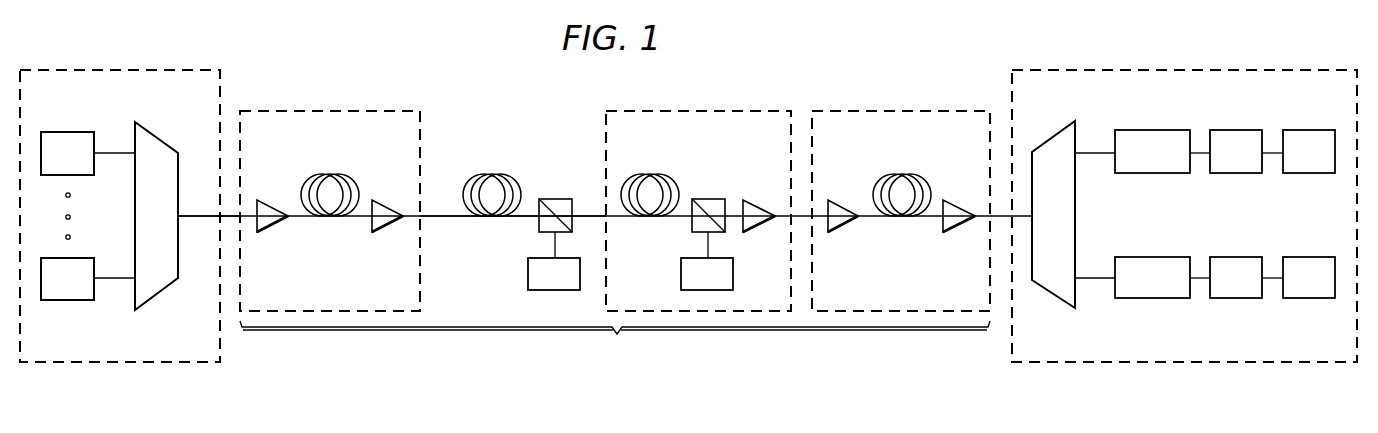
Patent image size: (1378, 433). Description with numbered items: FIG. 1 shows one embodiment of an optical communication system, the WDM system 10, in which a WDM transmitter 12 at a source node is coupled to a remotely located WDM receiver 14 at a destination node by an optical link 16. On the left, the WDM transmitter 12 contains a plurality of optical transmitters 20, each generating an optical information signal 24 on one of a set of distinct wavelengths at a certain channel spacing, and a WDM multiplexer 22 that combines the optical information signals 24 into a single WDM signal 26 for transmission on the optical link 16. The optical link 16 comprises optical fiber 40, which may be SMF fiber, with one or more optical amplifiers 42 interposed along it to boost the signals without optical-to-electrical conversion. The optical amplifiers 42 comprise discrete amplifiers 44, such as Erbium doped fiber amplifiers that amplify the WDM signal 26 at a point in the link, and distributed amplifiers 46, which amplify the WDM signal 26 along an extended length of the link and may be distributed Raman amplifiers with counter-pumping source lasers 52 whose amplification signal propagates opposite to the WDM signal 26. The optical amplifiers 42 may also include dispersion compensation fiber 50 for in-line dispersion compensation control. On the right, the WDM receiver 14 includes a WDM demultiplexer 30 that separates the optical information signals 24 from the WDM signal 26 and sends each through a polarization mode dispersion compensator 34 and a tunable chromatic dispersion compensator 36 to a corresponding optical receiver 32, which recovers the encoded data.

The WDM system 10 is at (418, 58).
The WDM transmitter 12 is at (99, 68).
The WDM receiver 14 is at (1195, 68).
The optical link 16 is at (615, 343).
The optical transmitter 20 is at (68, 131).
The WDM multiplexer 22 is at (161, 298).
The optical information signal 24 is at (125, 152).
The WDM signal 26 is at (211, 215).
The WDM demultiplexer 30 is at (1055, 300).
The optical receiver 32 is at (1310, 129).
The polarization mode dispersion compensator 34 is at (1152, 129).
The tunable chromatic dispersion compensator 36 is at (1236, 129).
The optical fiber 40 is at (463, 219).
The optical amplifier 42 is at (300, 109).
The discrete amplifier 44 is at (342, 275).
The distributed amplifier 46 is at (554, 198).
The dispersion compensation fiber 50 is at (306, 181).
The counter-pumping source laser 52 is at (527, 273).